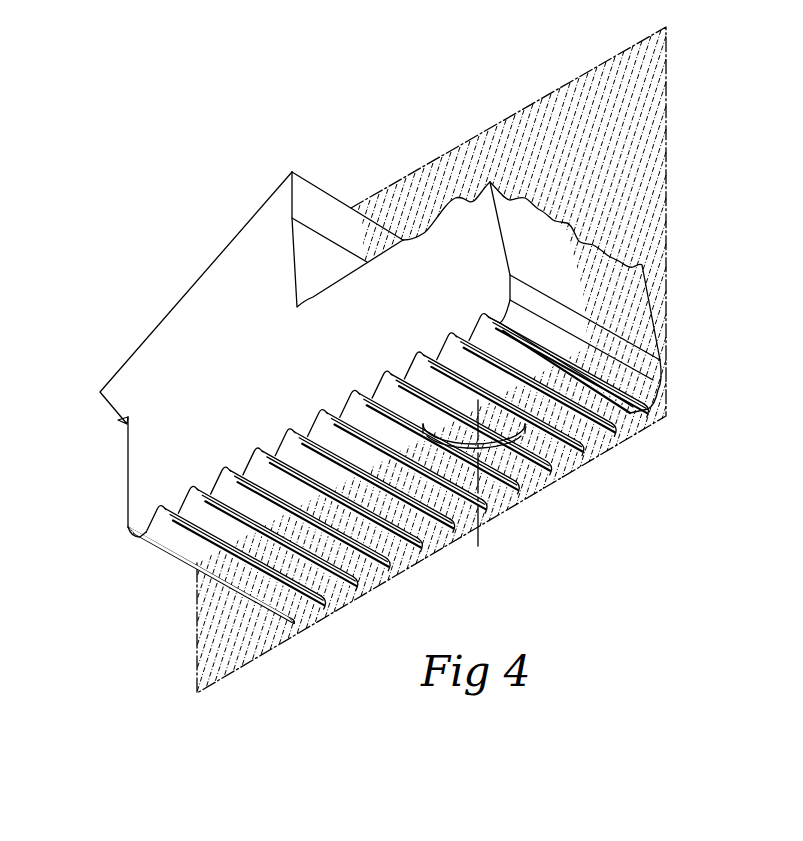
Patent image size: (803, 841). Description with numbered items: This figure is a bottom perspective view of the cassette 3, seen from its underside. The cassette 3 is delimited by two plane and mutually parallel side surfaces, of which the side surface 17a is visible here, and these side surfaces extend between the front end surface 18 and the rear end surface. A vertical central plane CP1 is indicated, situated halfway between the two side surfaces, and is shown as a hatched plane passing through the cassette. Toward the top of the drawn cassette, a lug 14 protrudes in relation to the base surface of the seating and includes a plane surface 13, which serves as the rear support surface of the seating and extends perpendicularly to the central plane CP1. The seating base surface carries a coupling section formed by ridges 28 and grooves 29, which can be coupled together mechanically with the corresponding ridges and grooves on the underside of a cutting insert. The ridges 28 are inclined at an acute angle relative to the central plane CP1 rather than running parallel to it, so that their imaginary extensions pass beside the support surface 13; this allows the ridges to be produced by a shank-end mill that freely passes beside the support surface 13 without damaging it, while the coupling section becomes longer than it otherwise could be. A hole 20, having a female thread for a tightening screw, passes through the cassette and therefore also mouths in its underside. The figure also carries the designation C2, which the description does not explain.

The cassette 3 is at (345, 353).
The plane surface 13 is at (336, 270).
The lug 14 is at (262, 243).
The side surface 17a is at (259, 374).
The front end surface 18 is at (553, 260).
The hole 20 is at (490, 412).
The ridges 28 is at (188, 525).
The grooves 29 is at (388, 393).
The vertical central plane CP1 is at (523, 110).
The hole axis C2 is at (478, 538).